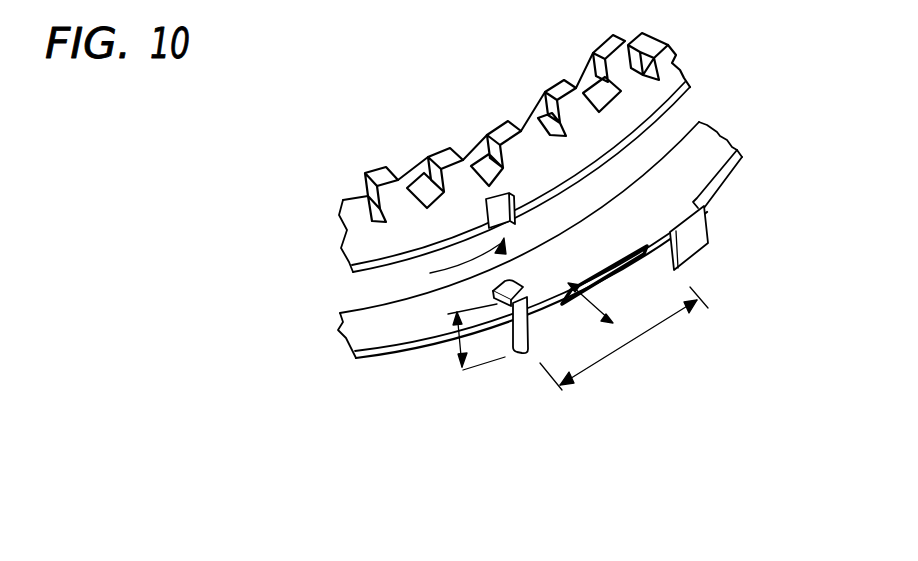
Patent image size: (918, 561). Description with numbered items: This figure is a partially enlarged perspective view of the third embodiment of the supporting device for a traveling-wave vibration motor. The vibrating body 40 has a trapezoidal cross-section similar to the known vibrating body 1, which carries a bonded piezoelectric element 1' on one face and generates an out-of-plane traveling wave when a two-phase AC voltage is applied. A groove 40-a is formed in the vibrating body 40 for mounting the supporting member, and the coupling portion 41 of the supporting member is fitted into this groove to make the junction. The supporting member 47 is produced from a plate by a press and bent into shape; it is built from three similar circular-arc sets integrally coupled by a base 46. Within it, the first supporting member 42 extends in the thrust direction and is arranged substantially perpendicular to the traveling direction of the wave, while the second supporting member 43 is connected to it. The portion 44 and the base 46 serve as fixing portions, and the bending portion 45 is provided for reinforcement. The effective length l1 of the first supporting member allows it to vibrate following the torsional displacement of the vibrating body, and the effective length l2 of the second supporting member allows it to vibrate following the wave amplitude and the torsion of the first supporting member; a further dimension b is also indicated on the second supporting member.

The vibrating body 1 is at (604, 56).
The piezoelectric element 1' is at (483, 195).
The vibrating body 40 is at (391, 206).
The groove 40-a is at (497, 188).
The coupling portion 41 is at (454, 266).
The first supporting member 42 is at (526, 352).
The second supporting member 43 is at (660, 274).
The fixing portion 44 is at (706, 195).
The bending portion 45 is at (693, 232).
The base 46 is at (368, 333).
The supporting member 47 is at (701, 429).
The slot width b is at (611, 301).
The effective length l1 is at (455, 360).
The effective length l2 is at (624, 338).